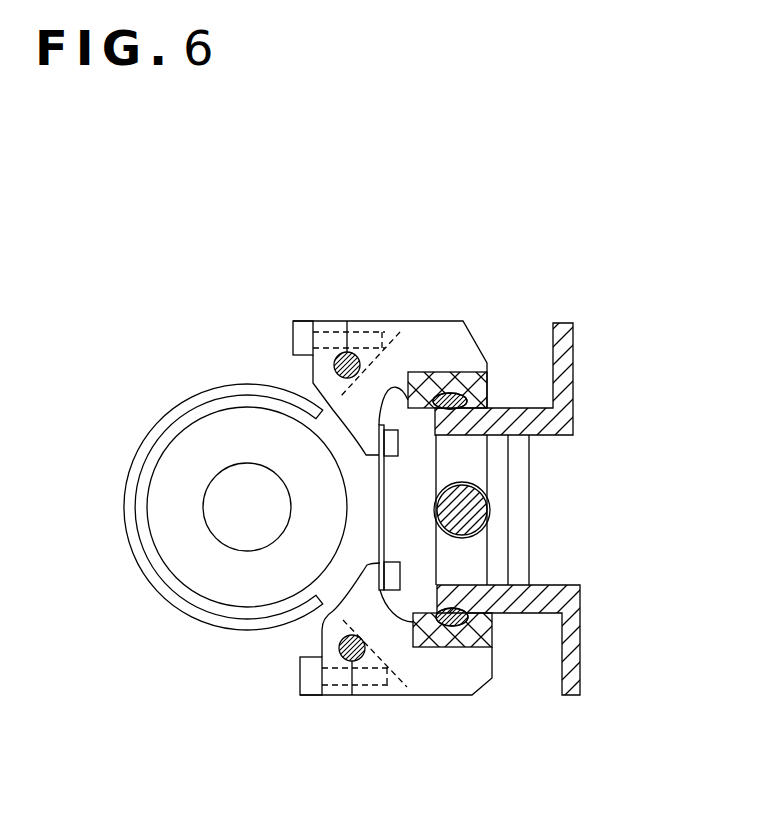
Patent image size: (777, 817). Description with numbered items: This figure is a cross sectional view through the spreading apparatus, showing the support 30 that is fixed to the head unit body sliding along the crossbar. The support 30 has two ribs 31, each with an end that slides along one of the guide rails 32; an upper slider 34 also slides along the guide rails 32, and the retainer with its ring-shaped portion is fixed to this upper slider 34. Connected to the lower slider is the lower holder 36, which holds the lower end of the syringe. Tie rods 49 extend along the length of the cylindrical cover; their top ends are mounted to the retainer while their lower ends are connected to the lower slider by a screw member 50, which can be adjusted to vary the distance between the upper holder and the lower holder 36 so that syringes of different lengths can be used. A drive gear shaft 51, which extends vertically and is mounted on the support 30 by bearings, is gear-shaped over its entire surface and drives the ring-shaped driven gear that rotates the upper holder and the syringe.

The support 30 is at (575, 410).
The ribs 31 is at (515, 407).
The guide rails 32 is at (487, 350).
The upper slider 34 is at (442, 372).
The lower holder 36 is at (190, 598).
The tie rods 49 is at (330, 321).
The screw member 50 is at (296, 340).
The drive gear shaft 51 is at (490, 508).